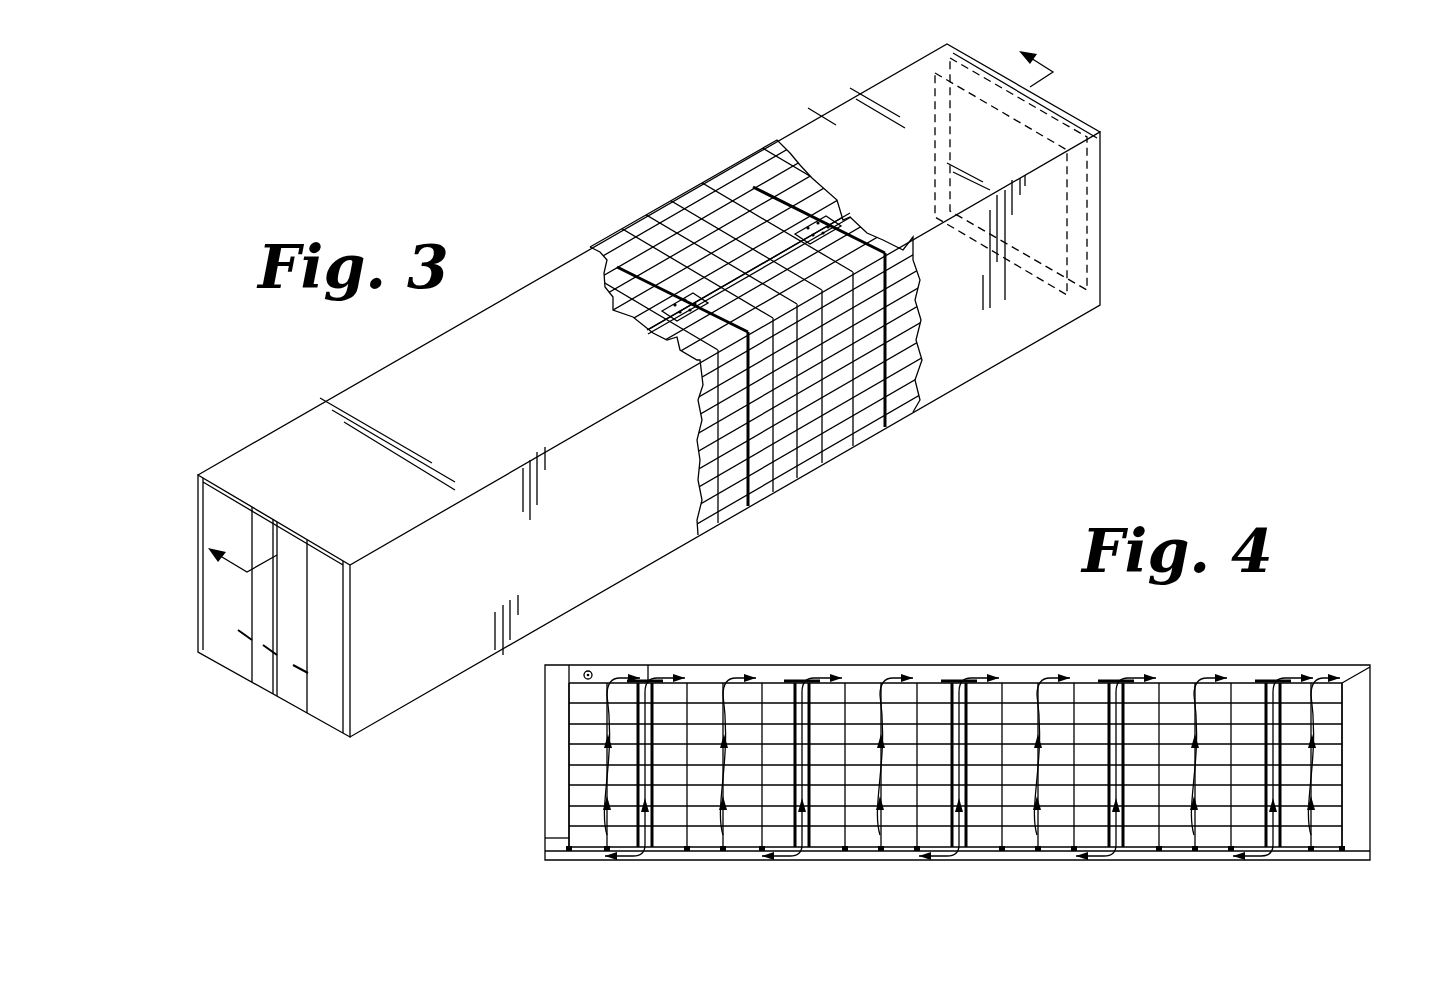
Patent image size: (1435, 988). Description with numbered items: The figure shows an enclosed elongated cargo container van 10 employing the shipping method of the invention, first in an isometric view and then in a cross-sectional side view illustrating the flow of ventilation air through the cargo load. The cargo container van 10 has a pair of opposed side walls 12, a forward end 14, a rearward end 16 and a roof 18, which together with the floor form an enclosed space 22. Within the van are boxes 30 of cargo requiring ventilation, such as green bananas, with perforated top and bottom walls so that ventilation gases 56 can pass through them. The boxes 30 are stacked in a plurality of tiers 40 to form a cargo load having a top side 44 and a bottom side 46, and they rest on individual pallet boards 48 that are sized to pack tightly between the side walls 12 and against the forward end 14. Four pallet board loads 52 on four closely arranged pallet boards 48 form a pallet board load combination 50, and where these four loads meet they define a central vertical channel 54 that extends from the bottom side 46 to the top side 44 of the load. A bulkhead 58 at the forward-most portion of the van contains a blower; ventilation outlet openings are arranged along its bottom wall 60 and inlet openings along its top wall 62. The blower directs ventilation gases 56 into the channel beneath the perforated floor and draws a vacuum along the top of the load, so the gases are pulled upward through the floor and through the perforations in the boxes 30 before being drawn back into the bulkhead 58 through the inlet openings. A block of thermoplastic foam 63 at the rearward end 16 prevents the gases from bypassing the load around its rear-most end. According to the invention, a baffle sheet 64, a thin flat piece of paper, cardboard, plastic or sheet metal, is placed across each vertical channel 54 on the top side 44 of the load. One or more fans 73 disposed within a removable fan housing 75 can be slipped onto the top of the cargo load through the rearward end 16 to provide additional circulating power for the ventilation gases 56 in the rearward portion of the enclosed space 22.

In FIG. 3, the cargo container van 10 is at (1043, 342).
In FIG. 4, the cargo container van 10 is at (980, 573).
In FIG. 3, the side walls 12 is at (655, 542).
In FIG. 3, the forward end 14 is at (1097, 258).
In FIG. 3, the rearward end 16 is at (330, 702).
In FIG. 3, the roof 18 is at (275, 455).
In FIG. 4, the roof 18 is at (860, 665).
In FIG. 4, the enclosed space 22 is at (1020, 665).
In FIG. 3, the boxes 30 is at (868, 424).
In FIG. 4, the boxes 30 is at (1055, 835).
In FIG. 3, the tiers 40 is at (802, 456).
In FIG. 4, the tiers 40 is at (935, 835).
In FIG. 4, the top side 44 is at (1082, 683).
In FIG. 4, the bottom side 46 is at (1098, 848).
In FIG. 4, the pallet boards 48 is at (675, 850).
In FIG. 3, the pallet board load combination 50 is at (648, 262).
In FIG. 3, the pallet board loads 52 is at (805, 200).
In FIG. 4, the pallet board loads 52 is at (778, 835).
In FIG. 4, the central vertical channel 54 is at (797, 748).
In FIG. 4, the ventilation gases 56 is at (1330, 852).
In FIG. 3, the bulkhead 58 is at (1085, 200).
In FIG. 4, the bulkhead 58 is at (1362, 735).
In FIG. 4, the bottom wall 60 is at (1358, 860).
In FIG. 3, the top wall 62 is at (1060, 125).
In FIG. 4, the top wall 62 is at (1356, 670).
In FIG. 4, the block of thermoplastic foam 63 is at (560, 838).
In FIG. 3, the baffle sheet 64 is at (662, 305).
In FIG. 4, the baffle sheet 64 is at (636, 681).
In FIG. 4, the fans 73 is at (569, 678).
In FIG. 4, the removable fan housing 75 is at (606, 672).